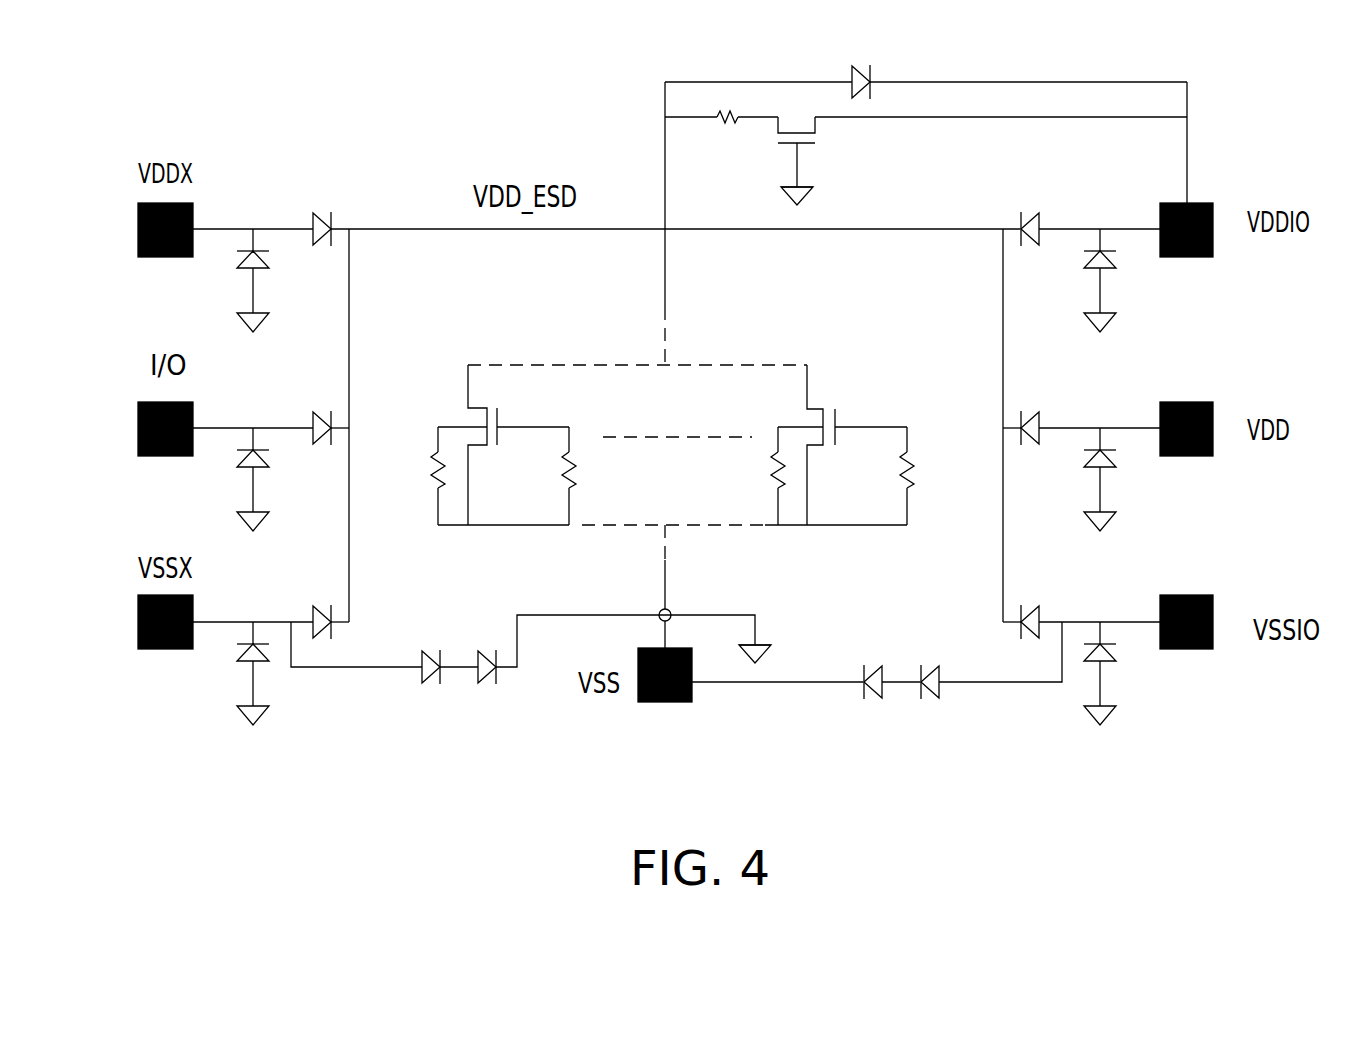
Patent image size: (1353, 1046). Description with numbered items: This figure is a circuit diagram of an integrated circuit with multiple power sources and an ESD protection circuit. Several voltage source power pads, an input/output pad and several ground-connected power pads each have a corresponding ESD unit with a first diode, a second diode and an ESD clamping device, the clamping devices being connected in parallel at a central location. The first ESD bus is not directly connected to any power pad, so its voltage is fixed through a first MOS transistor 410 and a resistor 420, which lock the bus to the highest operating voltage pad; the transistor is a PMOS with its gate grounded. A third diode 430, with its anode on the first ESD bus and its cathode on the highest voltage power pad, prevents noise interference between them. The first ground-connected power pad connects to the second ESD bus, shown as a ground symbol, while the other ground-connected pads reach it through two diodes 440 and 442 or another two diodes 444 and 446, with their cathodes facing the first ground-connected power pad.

The first MOS transistor 410 is at (822, 128).
The resistor 420 is at (732, 128).
The third diode 430 is at (873, 73).
The diode 440 is at (870, 667).
The diode 442 is at (930, 656).
The diode 444 is at (430, 648).
The diode 446 is at (488, 648).